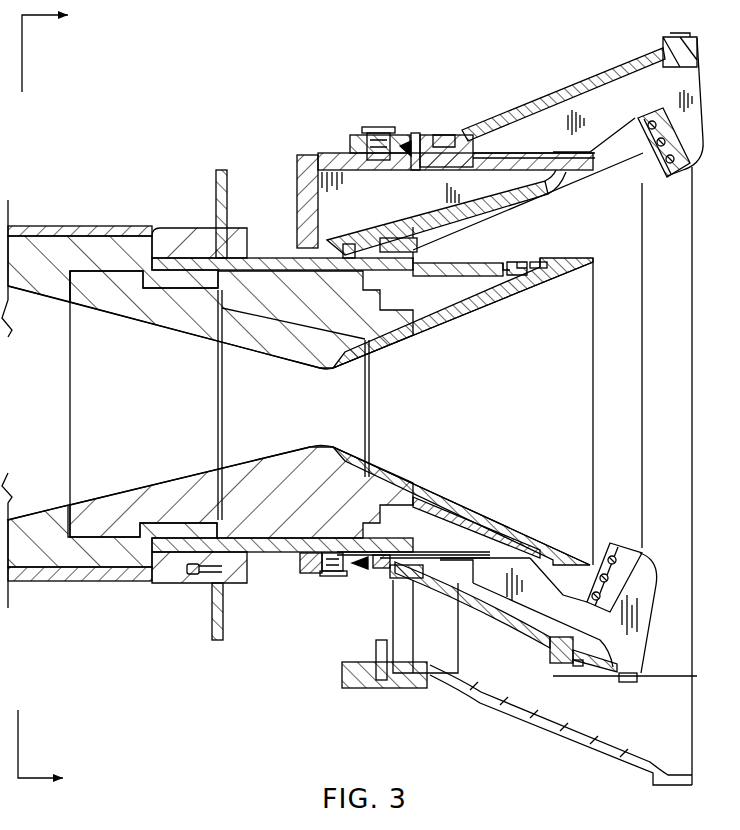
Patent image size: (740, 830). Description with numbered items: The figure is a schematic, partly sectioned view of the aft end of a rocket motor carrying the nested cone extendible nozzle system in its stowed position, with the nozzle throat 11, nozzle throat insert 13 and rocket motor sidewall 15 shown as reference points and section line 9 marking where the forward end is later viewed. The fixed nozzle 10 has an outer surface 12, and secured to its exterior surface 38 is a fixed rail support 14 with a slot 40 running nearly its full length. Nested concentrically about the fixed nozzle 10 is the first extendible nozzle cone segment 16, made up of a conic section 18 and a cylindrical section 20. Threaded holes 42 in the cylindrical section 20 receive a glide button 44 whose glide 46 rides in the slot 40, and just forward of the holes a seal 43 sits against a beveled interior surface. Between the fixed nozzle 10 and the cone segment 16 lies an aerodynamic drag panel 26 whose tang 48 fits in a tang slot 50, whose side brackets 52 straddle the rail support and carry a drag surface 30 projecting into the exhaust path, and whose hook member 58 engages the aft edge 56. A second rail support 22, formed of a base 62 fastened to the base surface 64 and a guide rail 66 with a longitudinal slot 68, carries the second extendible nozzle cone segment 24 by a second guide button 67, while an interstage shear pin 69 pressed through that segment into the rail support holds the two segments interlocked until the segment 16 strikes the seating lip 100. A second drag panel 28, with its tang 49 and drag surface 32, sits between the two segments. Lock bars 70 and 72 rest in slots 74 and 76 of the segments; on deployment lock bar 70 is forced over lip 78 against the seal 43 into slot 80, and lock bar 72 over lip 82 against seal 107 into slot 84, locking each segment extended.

The section line 9— 9 is at (57, 402).
The fixed nozzle 10 is at (505, 318).
The nozzle throat 11 is at (323, 371).
The outer surface 12 is at (466, 263).
The nozzle throat insert 13 is at (33, 553).
The fixed rail support 14 is at (488, 568).
The rocket motor sidewall 15 is at (67, 575).
The first extendible nozzle cone segment 16 is at (562, 193).
The conic section 18 is at (580, 178).
The cylindrical section 20 is at (378, 236).
The second rail support 22 is at (325, 151).
The second extendible nozzle cone segment 24 is at (571, 81).
The aerodynamic drag panel 26 is at (640, 606).
The second aerodynamic drag panel 28 is at (692, 125).
The drag surface 30 is at (625, 551).
The drag surface 32 is at (672, 172).
The exterior surface 38 is at (430, 556).
The slot 40 is at (530, 556).
The threaded hole 42 is at (320, 568).
The seal 43 is at (360, 570).
The glide button 44 is at (340, 577).
The glide 46 is at (322, 560).
The tang 48 is at (384, 568).
The tang 49 is at (436, 134).
The tang slot 50 is at (392, 570).
The side brackets 52 is at (538, 606).
The aft edge 56 is at (640, 679).
The hook member 58 is at (630, 684).
The base 62 is at (300, 176).
The base surface 64 is at (320, 256).
The guide rail 66 is at (458, 135).
The second guide button 67 is at (372, 131).
The longitudinal slot 68 is at (520, 152).
The interstage shear pin 69 is at (412, 133).
The lock bar 70 is at (337, 257).
The lock bar 72 is at (383, 689).
The slot 74 is at (345, 244).
The slot 76 is at (380, 664).
The lip 78 is at (517, 262).
The slot 80 is at (538, 262).
The lip 82 is at (560, 664).
The slot 84 is at (578, 667).
The seating lip 100 is at (576, 256).
The seal 107 is at (427, 681).